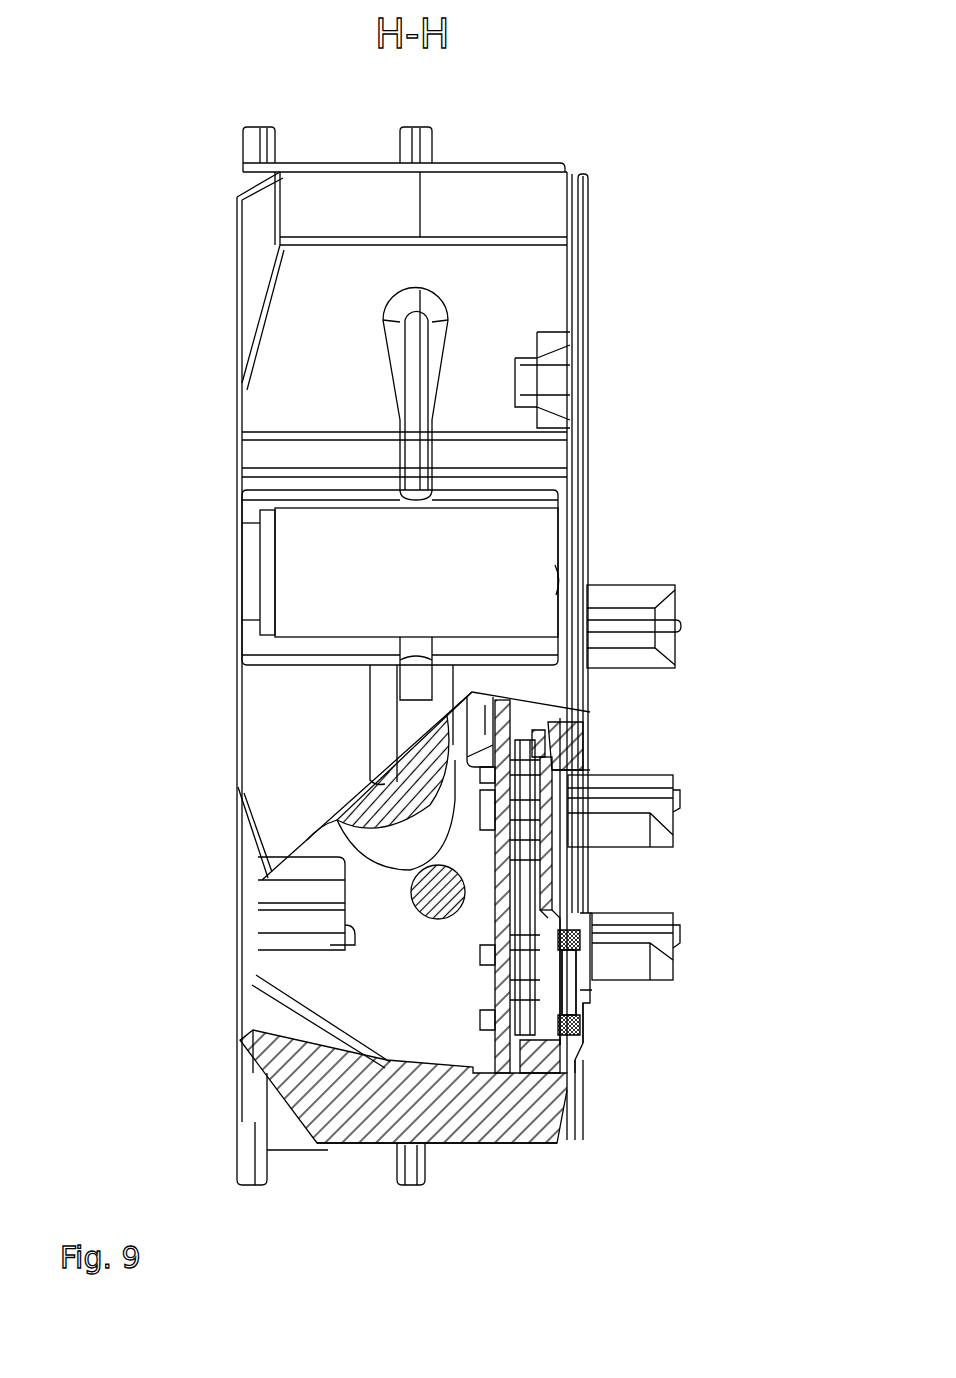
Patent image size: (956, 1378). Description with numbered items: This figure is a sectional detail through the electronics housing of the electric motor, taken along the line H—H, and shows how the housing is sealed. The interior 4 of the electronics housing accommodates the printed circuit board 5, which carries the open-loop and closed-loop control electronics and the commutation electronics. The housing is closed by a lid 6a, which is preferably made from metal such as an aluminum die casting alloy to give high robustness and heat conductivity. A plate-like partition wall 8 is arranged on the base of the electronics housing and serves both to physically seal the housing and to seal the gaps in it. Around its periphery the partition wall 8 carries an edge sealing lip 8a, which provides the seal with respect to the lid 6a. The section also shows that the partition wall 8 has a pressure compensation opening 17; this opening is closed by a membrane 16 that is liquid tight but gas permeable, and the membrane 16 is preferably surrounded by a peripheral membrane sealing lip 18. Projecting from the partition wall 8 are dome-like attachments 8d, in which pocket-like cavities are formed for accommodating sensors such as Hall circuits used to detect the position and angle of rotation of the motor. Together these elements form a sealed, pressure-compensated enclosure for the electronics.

The interior 4 is at (422, 990).
The printed circuit board 5 is at (548, 720).
The partition wall 8 is at (547, 868).
The dome like attachments 8d is at (647, 597).
The membrane 16 is at (590, 995).
The pressure compensation opening 17 is at (583, 1003).
The membrane sealing lip 18 is at (590, 1043).
The edge sealing lip 8a is at (582, 1130).
The lid 6a is at (467, 1115).